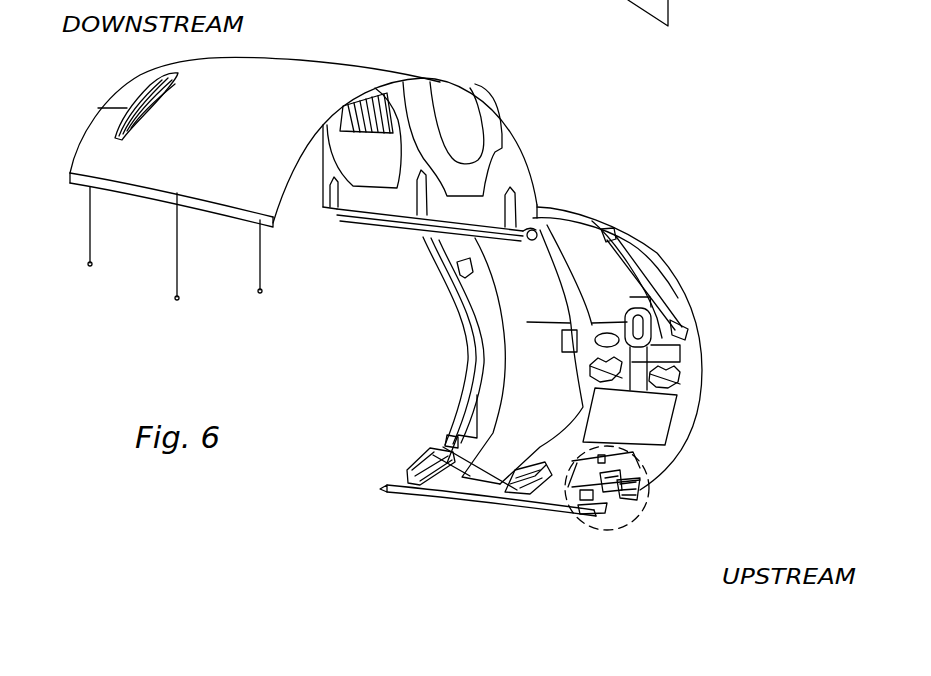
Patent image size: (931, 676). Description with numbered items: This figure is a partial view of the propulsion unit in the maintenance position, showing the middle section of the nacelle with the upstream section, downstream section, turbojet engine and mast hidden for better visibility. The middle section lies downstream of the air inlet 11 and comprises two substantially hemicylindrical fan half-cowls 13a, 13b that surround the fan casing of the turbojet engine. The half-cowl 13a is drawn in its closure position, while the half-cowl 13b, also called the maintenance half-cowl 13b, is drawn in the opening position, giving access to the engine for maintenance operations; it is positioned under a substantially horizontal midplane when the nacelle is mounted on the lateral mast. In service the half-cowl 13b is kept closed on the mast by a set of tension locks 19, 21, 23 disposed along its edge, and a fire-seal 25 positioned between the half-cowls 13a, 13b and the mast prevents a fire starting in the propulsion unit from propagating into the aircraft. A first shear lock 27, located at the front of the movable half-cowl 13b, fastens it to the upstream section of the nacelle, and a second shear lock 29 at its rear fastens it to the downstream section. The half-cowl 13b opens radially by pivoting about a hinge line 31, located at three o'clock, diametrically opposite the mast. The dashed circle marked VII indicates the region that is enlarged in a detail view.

The air inlet 11 is at (579, 174).
The fan half-cowl 13a is at (283, 82).
The fan half-cowl (maintenance half-cowl) 13b is at (677, 273).
The tension lock 19 is at (437, 490).
The tension lock 21 is at (527, 502).
The tension lock 23 is at (598, 518).
The fire-seal 25 is at (482, 503).
The first shear lock 27 is at (635, 492).
The second shear lock 29 is at (407, 473).
The hinge line 31 is at (378, 218).
The detail view VII is at (650, 470).